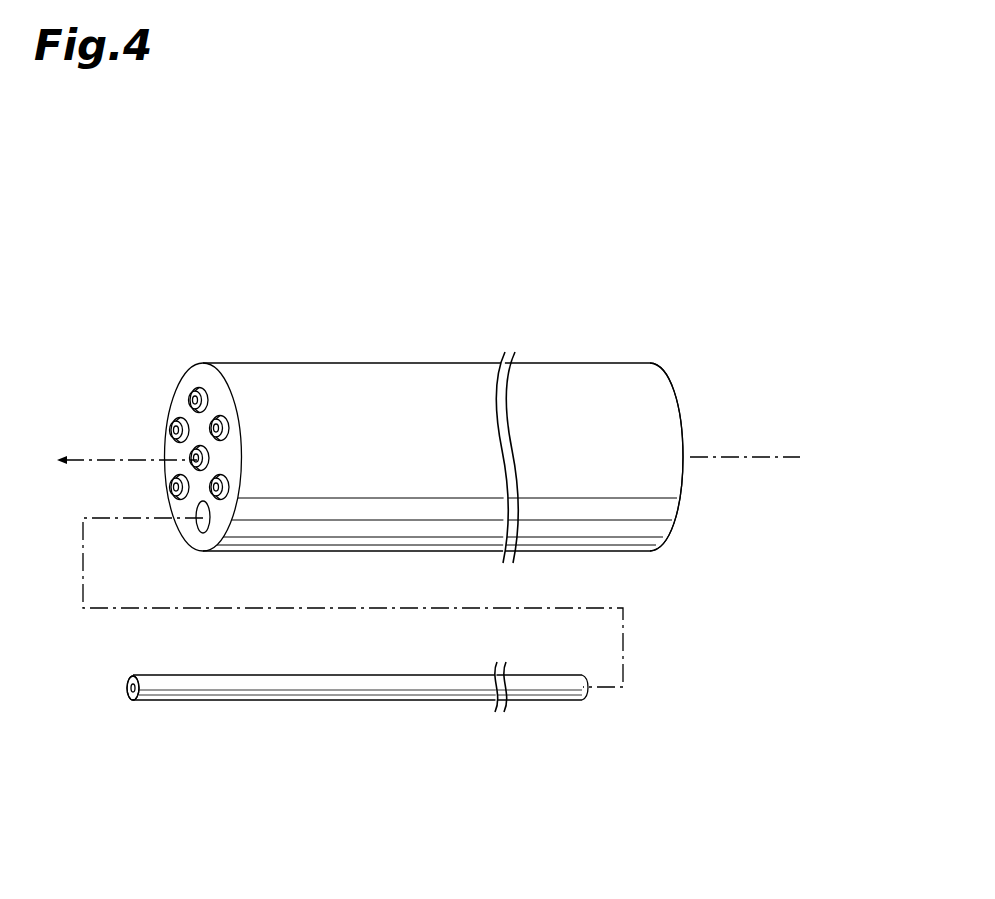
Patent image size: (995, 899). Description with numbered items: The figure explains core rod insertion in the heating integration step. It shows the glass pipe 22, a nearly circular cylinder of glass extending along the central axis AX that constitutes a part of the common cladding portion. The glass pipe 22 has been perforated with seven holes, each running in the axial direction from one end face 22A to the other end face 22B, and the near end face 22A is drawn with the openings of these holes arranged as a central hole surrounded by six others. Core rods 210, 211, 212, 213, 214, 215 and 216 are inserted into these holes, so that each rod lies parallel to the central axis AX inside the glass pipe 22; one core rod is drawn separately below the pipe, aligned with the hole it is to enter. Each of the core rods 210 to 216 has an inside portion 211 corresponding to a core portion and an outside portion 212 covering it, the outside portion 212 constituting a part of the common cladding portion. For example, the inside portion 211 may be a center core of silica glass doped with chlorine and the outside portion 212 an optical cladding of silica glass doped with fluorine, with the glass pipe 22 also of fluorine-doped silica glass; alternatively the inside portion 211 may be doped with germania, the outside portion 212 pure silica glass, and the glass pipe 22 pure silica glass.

The glass pipe 22 is at (443, 360).
The one end face 22A is at (195, 373).
The other end face 22B is at (680, 405).
The core rod 210 is at (190, 455).
The inside portion 211 is at (218, 418).
The outside portion 212 is at (225, 503).
The core rod 213 is at (280, 690).
The core rod 214 is at (167, 480).
The core rod 215 is at (171, 425).
The core rod 216 is at (189, 394).
The central axis AX is at (408, 462).